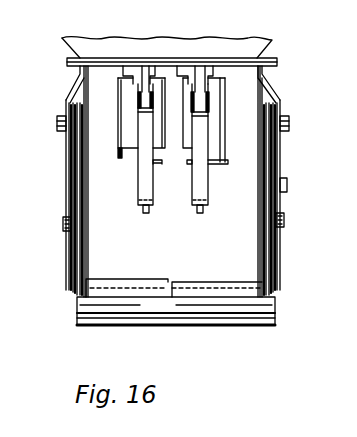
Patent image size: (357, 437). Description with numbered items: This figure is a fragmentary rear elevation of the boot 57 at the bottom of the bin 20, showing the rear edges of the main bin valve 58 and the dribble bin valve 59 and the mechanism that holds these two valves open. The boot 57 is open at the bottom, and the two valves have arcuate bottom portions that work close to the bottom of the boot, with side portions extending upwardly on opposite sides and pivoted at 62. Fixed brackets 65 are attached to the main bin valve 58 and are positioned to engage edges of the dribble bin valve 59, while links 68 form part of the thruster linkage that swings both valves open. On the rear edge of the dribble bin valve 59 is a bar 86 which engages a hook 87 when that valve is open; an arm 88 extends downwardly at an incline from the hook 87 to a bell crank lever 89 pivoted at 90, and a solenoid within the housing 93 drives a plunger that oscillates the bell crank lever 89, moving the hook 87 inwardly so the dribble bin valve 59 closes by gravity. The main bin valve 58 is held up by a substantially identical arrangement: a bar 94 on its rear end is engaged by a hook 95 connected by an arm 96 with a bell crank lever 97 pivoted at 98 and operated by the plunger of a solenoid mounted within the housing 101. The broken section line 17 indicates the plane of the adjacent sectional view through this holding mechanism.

The section line 17 is at (160, 34).
The bin 20 is at (272, 42).
The boot 57 is at (252, 245).
The main bin valve 58 is at (86, 270).
The dribble bin valve 59 is at (280, 305).
The pivot 62 is at (56, 124).
The bracket 65 is at (62, 226).
The link 68 is at (286, 186).
The bar 86 is at (216, 284).
The hook 87 is at (198, 110).
The arm 88 is at (208, 190).
The bell crank lever 89 is at (210, 208).
The pivot 90 is at (221, 164).
The housing 93 is at (217, 135).
The bar 94 is at (152, 280).
The hook 95 is at (145, 108).
The arm 96 is at (140, 188).
The bell crank lever 97 is at (141, 211).
The pivot 98 is at (128, 163).
The housing 101 is at (127, 97).